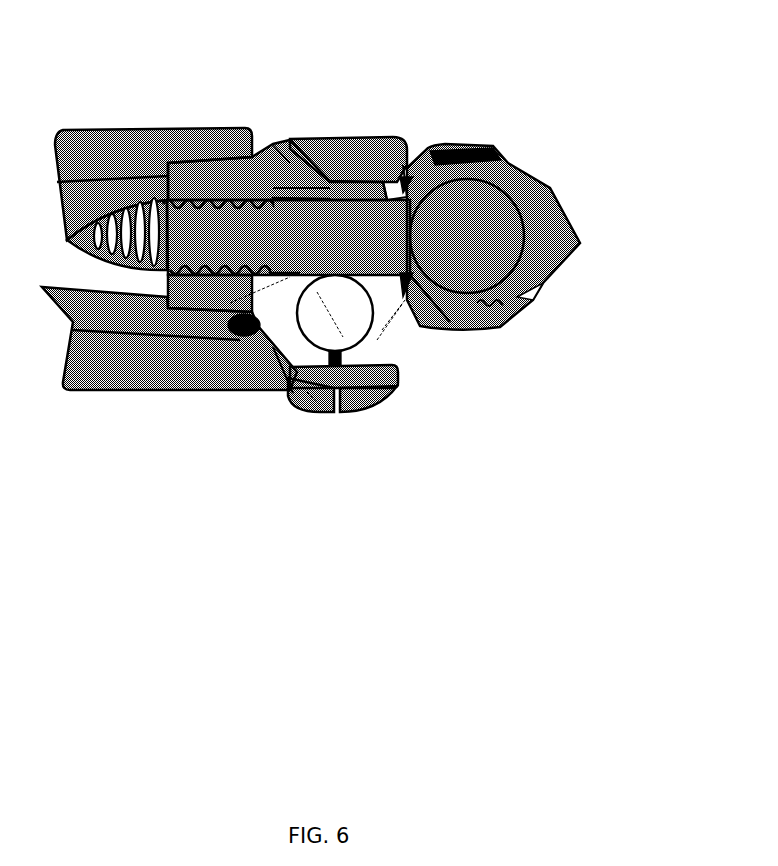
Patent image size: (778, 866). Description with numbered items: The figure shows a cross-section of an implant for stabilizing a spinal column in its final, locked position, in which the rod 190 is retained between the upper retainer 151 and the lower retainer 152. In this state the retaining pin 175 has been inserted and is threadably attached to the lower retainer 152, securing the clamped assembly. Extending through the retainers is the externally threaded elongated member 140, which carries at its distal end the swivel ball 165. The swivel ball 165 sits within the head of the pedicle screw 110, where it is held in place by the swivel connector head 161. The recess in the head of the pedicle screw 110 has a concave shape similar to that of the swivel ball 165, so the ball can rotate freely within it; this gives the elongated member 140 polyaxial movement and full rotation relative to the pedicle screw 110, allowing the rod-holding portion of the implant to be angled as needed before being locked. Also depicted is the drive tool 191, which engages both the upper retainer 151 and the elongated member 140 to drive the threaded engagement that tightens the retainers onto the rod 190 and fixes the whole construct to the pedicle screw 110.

The pedicle screw 110 is at (545, 240).
The externally threaded elongated member 140 is at (173, 240).
The upper retainer 151 is at (251, 165).
The lower retainer 152 is at (352, 162).
The swivel connector head 161 is at (470, 315).
The swivel ball 165 is at (455, 203).
The retaining pin 175 is at (375, 378).
The rod 190 is at (343, 310).
The drive tool 191 is at (122, 148).